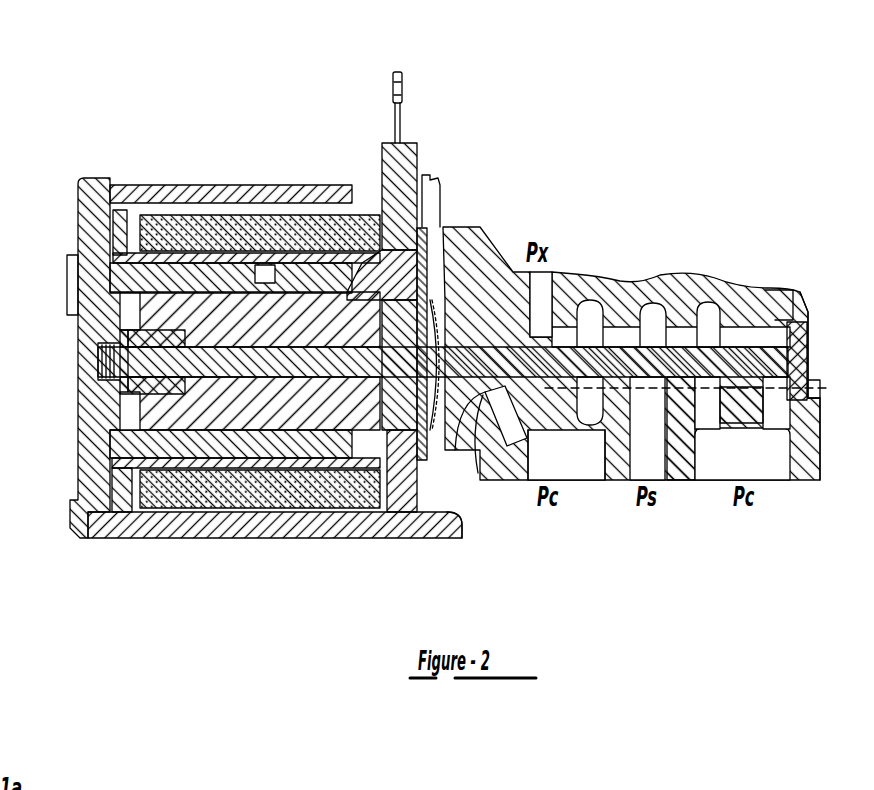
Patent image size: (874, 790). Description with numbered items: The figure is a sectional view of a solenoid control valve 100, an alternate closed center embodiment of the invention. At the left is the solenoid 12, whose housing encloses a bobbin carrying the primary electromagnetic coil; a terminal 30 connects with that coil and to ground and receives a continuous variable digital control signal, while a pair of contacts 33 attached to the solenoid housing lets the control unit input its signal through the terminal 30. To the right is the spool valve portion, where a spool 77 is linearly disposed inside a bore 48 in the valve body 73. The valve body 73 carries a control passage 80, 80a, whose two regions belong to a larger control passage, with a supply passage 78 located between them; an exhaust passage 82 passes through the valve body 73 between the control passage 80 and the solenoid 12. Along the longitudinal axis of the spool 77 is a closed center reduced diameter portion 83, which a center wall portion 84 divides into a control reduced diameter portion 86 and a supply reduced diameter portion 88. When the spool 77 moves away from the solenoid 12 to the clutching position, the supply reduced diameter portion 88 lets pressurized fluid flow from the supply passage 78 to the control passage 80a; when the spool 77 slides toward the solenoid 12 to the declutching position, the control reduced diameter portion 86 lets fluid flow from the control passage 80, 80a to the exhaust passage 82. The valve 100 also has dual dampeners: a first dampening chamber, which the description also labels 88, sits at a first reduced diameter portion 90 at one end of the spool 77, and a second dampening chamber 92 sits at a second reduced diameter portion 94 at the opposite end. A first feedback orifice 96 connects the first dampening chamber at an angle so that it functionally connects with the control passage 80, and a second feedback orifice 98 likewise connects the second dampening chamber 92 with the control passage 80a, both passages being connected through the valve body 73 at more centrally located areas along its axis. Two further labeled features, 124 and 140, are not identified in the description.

The solenoid 12 is at (134, 185).
The terminal 30 is at (410, 157).
The contacts 33 is at (403, 95).
The valve body 73 is at (488, 258).
The valve 100 is at (718, 186).
The exhaust passage 82 is at (543, 290).
The control reduced diameter portion 86 is at (632, 278).
The center wall portion 84 is at (673, 330).
The supply reduced diameter portion 88 is at (683, 292).
The end wall 140 is at (782, 300).
The spool 77 is at (808, 332).
The second reduced diameter portion 94 is at (812, 360).
The second dampening chamber 92 is at (815, 398).
The second feedback orifice 98 is at (773, 417).
The control passage 80a is at (723, 448).
The supply passage 78 is at (655, 460).
The closed center reduced diameter portion 83 is at (612, 470).
The chamber wall 124 is at (580, 467).
The control passage 80 is at (555, 457).
The bore 48 is at (510, 437).
The first feedback orifice 96 is at (490, 455).
The first reduced diameter portion 90 is at (462, 490).